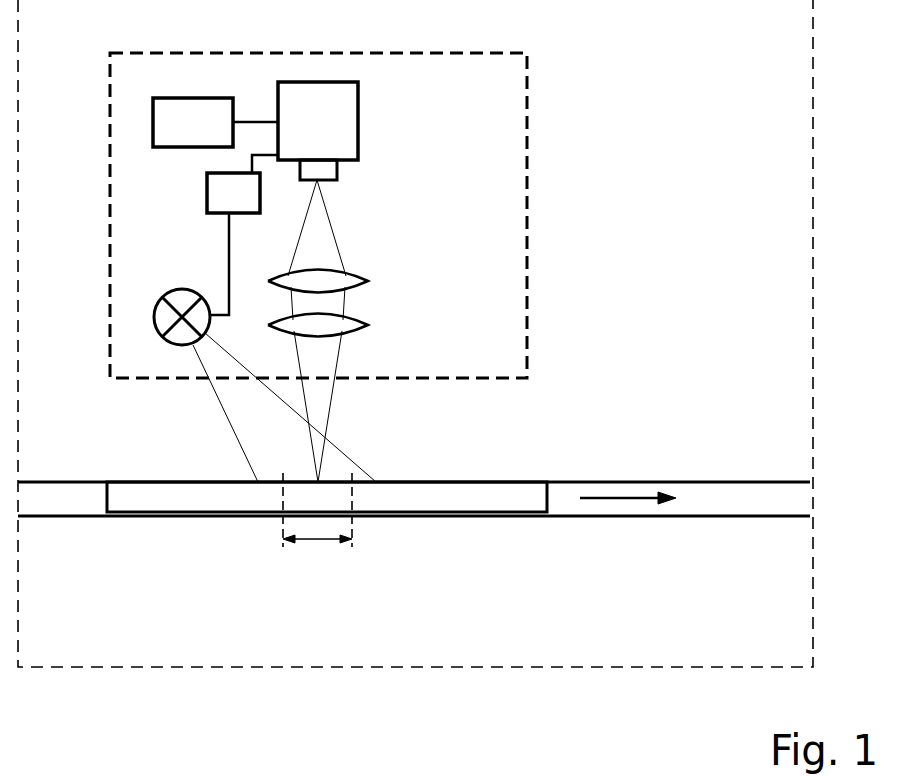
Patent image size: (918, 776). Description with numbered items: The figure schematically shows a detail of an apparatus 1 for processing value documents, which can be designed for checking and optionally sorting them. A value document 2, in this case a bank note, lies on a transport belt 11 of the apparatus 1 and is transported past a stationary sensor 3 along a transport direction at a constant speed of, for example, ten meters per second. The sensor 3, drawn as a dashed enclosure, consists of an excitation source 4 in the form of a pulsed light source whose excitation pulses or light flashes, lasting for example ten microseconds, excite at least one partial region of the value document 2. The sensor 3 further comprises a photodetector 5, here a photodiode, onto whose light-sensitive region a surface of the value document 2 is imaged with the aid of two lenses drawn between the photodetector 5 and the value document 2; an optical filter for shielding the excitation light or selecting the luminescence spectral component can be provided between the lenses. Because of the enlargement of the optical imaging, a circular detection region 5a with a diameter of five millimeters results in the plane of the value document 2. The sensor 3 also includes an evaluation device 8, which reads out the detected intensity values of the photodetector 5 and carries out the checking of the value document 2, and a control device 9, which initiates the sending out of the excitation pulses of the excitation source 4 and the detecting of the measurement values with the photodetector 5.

The apparatus 1 is at (815, 122).
The value document 2 is at (440, 513).
The sensor 3 is at (528, 122).
The excitation source 4 is at (182, 288).
The photodetector 5 is at (318, 282).
The detection region 5a is at (320, 540).
The evaluation device 8 is at (215, 122).
The control device 9 is at (242, 235).
The transport belt 11 is at (740, 482).